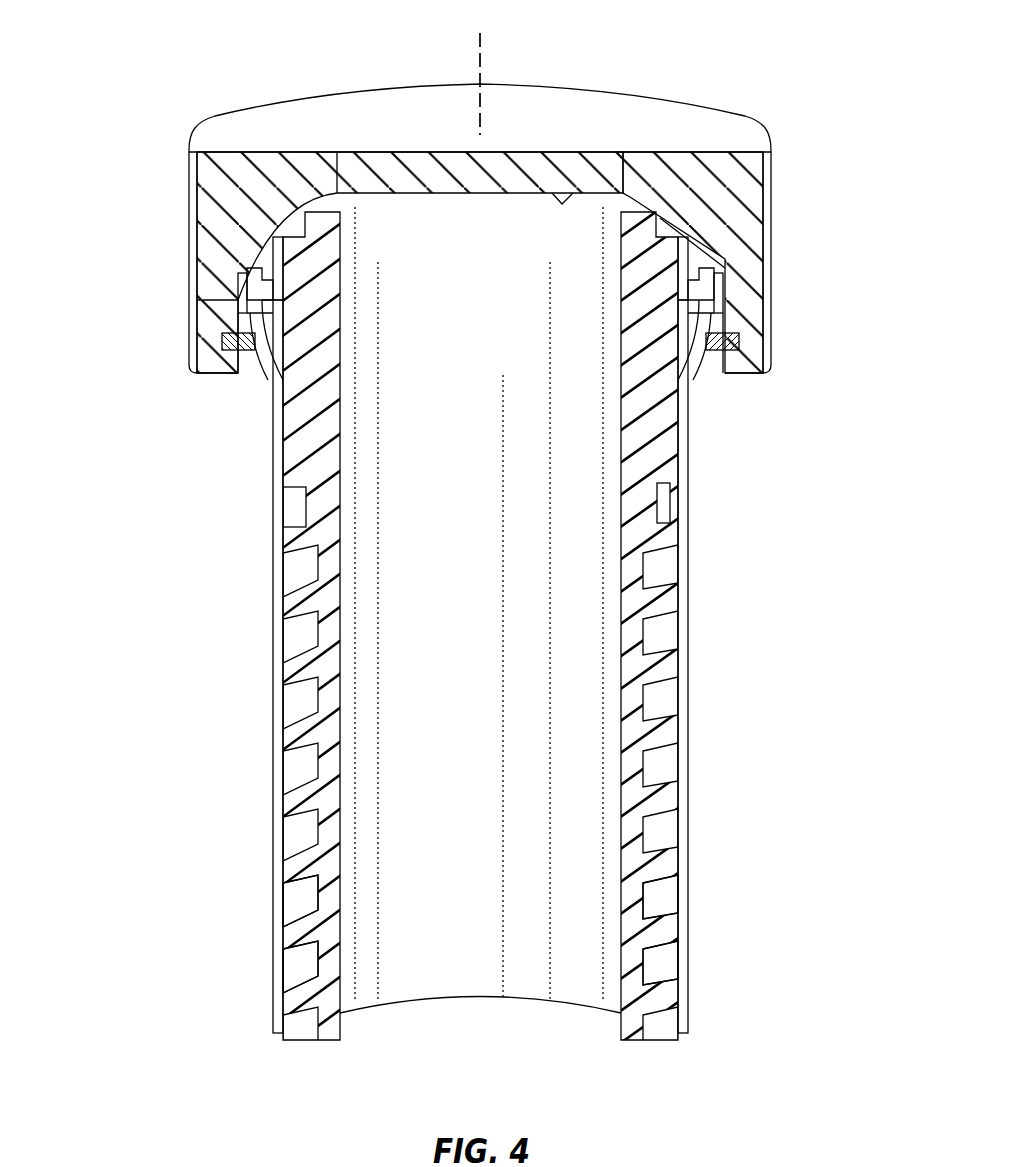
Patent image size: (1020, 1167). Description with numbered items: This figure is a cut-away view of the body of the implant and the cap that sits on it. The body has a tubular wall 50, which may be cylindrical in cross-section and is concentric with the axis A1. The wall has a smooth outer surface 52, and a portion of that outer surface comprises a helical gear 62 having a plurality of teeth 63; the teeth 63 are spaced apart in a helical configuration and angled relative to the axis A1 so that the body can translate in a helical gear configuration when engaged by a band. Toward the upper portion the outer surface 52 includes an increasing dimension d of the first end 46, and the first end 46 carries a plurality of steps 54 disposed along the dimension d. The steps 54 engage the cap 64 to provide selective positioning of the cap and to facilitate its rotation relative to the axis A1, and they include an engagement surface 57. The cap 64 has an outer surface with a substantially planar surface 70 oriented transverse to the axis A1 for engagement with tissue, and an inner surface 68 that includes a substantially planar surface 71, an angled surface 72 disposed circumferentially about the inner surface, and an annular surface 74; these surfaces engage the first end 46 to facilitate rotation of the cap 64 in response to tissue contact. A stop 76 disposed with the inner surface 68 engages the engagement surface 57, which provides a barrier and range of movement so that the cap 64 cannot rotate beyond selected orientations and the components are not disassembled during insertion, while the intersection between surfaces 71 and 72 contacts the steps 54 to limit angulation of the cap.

The first end 46 is at (366, 218).
The axis A1 is at (479, 67).
The substantially planar surface 71 is at (577, 190).
The substantially planar surface 70 is at (670, 126).
The cap 64 is at (772, 233).
The steps 54 is at (697, 292).
The engagement surface 57 is at (695, 335).
The tubular wall 50 is at (547, 623).
The outer surface 52 is at (690, 590).
The helical gear 62 is at (667, 762).
The teeth 63 is at (660, 833).
The angled surface 72 is at (250, 277).
The inner surface 68 is at (258, 295).
The annular surface 74 is at (240, 338).
The stop 76 is at (262, 330).
The increasing dimension d is at (278, 345).